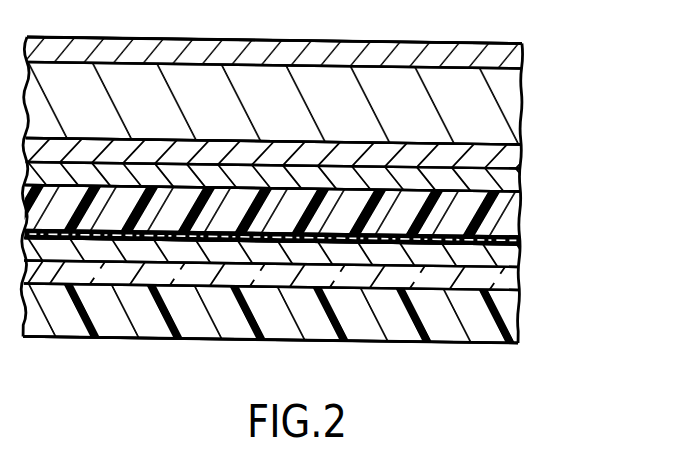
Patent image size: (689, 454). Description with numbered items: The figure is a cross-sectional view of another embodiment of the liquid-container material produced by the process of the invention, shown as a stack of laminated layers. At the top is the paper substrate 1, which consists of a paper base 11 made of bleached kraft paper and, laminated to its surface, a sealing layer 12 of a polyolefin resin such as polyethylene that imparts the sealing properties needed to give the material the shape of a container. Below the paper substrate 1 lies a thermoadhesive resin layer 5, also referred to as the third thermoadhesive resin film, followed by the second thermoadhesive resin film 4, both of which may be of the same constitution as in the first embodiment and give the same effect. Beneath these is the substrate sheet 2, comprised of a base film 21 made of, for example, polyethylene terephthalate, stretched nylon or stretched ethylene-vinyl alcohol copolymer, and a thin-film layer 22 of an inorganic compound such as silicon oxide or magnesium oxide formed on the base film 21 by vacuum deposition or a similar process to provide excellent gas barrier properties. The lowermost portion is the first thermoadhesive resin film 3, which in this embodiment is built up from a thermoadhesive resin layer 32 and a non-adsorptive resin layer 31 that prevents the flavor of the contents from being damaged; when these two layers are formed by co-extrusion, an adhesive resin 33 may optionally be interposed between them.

The paper substrate 1 is at (602, 45).
The paper base 11 is at (522, 97).
The sealing layer 12 is at (522, 61).
The thermoadhesive resin layer 5 is at (522, 152).
The second thermoadhesive resin film 4 is at (522, 173).
The substrate sheet 2 is at (607, 190).
The base film 21 is at (502, 215).
The thin-film layer 22 is at (522, 240).
The first thermoadhesive resin film 3 is at (615, 258).
The non-adsorptive resin layer 31 is at (515, 307).
The thermoadhesive resin layer 32 is at (522, 258).
The adhesive resin 33 is at (508, 285).